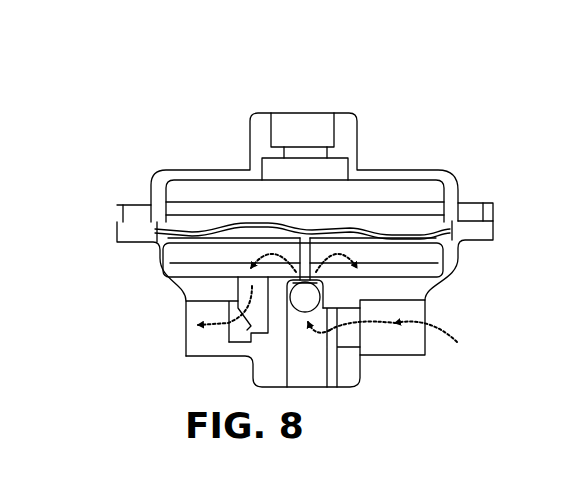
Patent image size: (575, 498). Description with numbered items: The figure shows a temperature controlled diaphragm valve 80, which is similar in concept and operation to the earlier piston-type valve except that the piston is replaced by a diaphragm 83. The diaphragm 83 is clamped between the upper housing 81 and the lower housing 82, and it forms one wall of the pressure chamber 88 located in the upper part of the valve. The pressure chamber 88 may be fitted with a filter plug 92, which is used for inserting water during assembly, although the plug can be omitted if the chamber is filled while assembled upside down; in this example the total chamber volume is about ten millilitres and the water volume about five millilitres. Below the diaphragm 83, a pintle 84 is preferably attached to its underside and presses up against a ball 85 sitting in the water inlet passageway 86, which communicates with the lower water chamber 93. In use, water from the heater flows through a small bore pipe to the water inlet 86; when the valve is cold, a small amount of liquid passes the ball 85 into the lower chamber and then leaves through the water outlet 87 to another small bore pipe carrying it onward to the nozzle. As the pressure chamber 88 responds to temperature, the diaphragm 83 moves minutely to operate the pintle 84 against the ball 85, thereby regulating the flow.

The valve 80 is at (392, 150).
The upper housing 81 is at (461, 160).
The lower housing 82 is at (447, 270).
The diaphragm 83 is at (167, 235).
The pintle 84 is at (334, 263).
The ball 85 is at (308, 308).
The water inlet passageway 86 is at (413, 337).
The water outlet 87 is at (201, 339).
The pressure chamber 88 is at (431, 195).
The filter plug 92 is at (314, 121).
The lower water chamber 93 is at (188, 252).